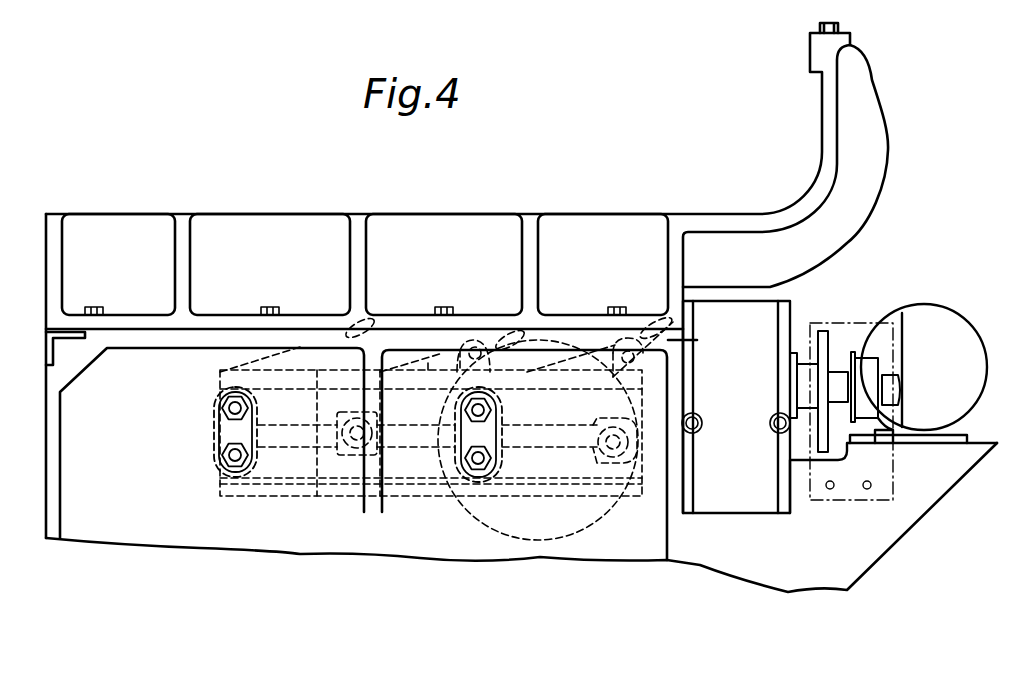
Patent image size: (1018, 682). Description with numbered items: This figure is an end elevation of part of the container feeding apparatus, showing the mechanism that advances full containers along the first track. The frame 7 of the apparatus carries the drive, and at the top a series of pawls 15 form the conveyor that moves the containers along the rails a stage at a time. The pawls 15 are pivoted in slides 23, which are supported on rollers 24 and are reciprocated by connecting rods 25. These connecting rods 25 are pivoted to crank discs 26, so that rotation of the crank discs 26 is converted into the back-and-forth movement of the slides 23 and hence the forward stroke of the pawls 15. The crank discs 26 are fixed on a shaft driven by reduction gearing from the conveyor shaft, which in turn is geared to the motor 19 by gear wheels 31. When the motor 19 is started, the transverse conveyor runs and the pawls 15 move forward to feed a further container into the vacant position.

The frame 7 is at (300, 232).
The pawls 15 is at (498, 327).
The motor 19 is at (986, 352).
The slides 23 is at (273, 497).
The rollers 24 is at (215, 470).
The connecting rods 25 is at (562, 450).
The crank discs 26 is at (473, 518).
The gear wheels 31 is at (826, 342).